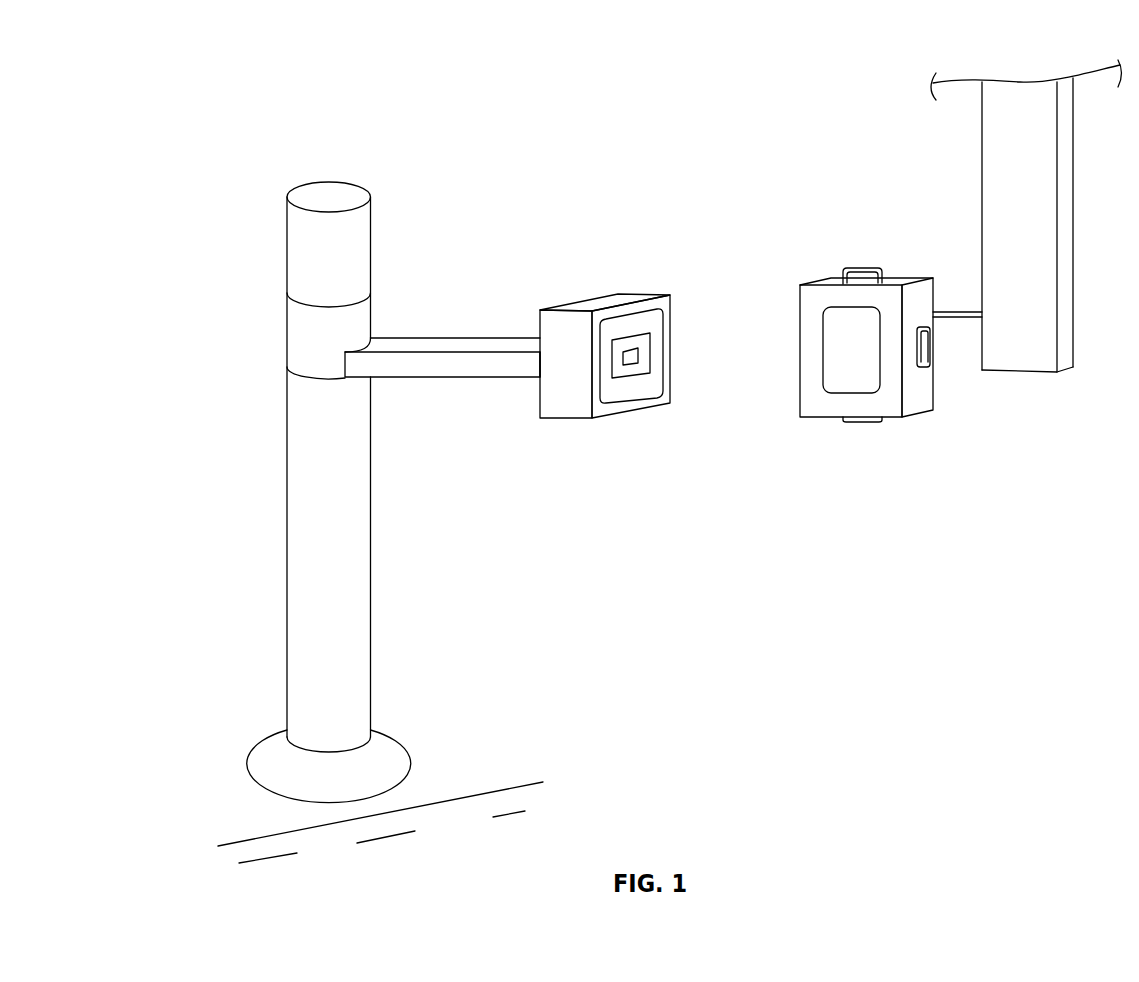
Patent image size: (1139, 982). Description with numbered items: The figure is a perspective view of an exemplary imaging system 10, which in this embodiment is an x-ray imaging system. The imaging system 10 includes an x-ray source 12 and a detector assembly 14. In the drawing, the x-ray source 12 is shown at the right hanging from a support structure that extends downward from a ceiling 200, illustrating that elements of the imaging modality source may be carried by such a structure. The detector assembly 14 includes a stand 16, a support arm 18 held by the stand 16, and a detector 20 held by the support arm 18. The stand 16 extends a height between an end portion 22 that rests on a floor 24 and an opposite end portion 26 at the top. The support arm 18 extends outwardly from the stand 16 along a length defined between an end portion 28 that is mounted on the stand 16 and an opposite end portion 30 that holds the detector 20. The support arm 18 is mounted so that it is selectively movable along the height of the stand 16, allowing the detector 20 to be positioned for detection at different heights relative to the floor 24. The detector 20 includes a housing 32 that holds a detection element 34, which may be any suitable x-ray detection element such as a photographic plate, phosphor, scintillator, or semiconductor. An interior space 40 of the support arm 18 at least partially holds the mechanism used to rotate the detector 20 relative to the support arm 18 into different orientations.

The imaging system 10 is at (243, 113).
The x-ray source 12 is at (894, 241).
The detector assembly 14 is at (483, 274).
The stand 16 is at (298, 584).
The support arm 18 is at (412, 368).
The detector 20 is at (613, 295).
The end portion 22 is at (390, 704).
The floor 24 is at (434, 842).
The end portion 26 is at (277, 207).
The end portion 28 is at (385, 319).
The end portion 30 is at (534, 386).
The housing 32 is at (560, 406).
The detection element 34 is at (644, 367).
The interior space 40 is at (485, 362).
The ceiling 200 is at (955, 87).